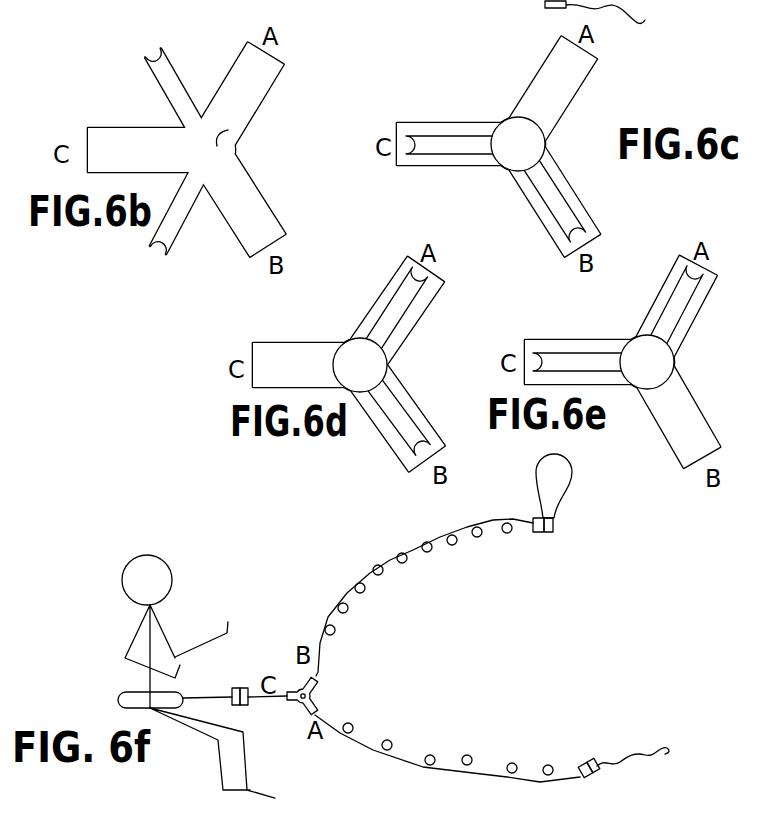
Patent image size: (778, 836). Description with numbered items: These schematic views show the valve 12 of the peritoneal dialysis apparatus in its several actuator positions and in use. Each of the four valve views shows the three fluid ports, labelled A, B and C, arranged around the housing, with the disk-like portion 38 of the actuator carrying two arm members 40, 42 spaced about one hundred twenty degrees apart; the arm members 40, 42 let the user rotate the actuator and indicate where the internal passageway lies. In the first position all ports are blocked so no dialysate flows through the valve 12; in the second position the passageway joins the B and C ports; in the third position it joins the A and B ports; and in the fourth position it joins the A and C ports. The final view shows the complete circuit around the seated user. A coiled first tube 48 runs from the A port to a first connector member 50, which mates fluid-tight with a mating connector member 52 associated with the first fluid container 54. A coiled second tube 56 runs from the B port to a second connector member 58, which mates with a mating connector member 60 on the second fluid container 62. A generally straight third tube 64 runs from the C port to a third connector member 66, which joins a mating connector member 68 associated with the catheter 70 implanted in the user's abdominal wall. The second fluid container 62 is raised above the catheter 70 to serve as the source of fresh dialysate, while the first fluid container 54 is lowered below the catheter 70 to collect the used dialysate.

In FIG. 6b, the valve 12 is at (234, 158).
In FIG. 6c, the valve 12 is at (556, 158).
In FIG. 6d, the valve 12 is at (346, 327).
In FIG. 6e, the valve 12 is at (690, 357).
In FIG. 6f, the valve 12 is at (320, 695).
In FIG. 6b, the disk-like portion 38 is at (236, 130).
In FIG. 6c, the disk-like portion 38 is at (508, 127).
In FIG. 6d, the disk-like portion 38 is at (384, 378).
In FIG. 6e, the disk-like portion 38 is at (643, 350).
In FIG. 6b, the arm member 40 is at (163, 73).
In FIG. 6c, the arm member 40 is at (559, 200).
In FIG. 6d, the arm member 40 is at (402, 310).
In FIG. 6e, the arm member 40 is at (683, 300).
In FIG. 6b, the arm member 42 is at (177, 226).
In FIG. 6c, the arm member 42 is at (438, 138).
In FIG. 6d, the arm member 42 is at (407, 423).
In FIG. 6e, the arm member 42 is at (563, 358).
In FIG. 6f, the first tube 48 is at (466, 756).
In FIG. 6f, the first connector member 50 is at (582, 764).
In FIG. 6f, the mating connector member 52 is at (593, 760).
In FIG. 6f, the first fluid container 54 is at (630, 750).
In FIG. 6f, the second tube 56 is at (363, 575).
In FIG. 6f, the second connector member 58 is at (527, 534).
In FIG. 6f, the mating connector member 60 is at (548, 534).
In FIG. 6f, the second fluid container 62 is at (560, 483).
In FIG. 6f, the third tube 64 is at (257, 698).
In FIG. 6f, the third connector member 66 is at (245, 687).
In FIG. 6f, the mating connector member 68 is at (233, 690).
In FIG. 6f, the catheter 70 is at (133, 697).